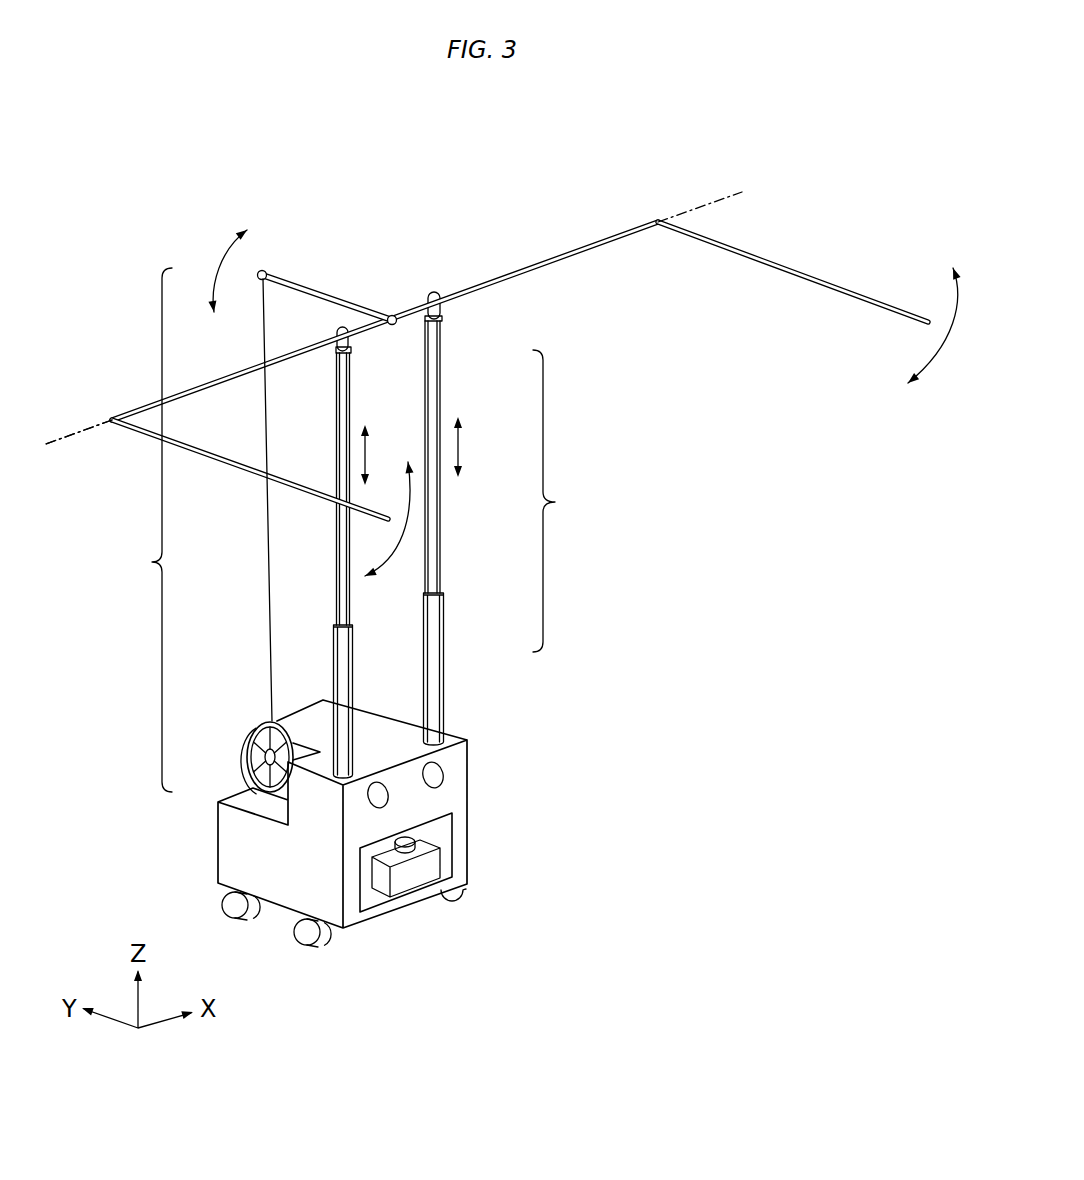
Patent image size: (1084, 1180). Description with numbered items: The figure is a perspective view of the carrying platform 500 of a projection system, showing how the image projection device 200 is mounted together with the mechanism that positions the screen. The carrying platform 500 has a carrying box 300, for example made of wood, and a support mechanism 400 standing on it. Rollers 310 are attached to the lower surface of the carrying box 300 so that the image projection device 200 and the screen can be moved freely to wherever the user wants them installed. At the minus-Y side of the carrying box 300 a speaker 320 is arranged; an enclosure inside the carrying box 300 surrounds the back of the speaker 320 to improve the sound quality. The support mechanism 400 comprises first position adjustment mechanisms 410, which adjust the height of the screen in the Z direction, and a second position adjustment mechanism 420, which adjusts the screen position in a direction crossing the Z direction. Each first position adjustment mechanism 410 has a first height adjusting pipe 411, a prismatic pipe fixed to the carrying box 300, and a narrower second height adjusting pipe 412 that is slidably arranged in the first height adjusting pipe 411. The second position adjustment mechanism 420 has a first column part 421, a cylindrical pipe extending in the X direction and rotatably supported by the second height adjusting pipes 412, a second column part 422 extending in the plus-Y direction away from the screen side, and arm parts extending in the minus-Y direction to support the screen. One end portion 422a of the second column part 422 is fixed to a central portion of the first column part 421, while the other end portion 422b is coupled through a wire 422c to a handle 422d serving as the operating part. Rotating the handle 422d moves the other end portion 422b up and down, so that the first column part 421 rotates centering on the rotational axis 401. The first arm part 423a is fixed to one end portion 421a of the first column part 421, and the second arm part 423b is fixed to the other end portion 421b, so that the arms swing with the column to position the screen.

The carrying platform 500 is at (832, 108).
The support mechanism 400 is at (643, 574).
The first position adjustment mechanisms 410 is at (484, 501).
The first height adjusting pipe 411 is at (443, 635).
The second height adjusting pipe 412 is at (442, 362).
The second position adjustment mechanism 420 is at (138, 530).
The first column part 421 is at (513, 274).
The one end portion of the first column part 421a is at (112, 418).
The other end portion of the first column part 421b is at (658, 220).
The second column part 422 is at (322, 292).
The one end portion of the second column part 422a is at (392, 316).
The other end portion of the second column part 422b is at (264, 271).
The wire 422c is at (268, 605).
The handle 422d is at (265, 722).
The first arm part 423a is at (232, 462).
The second arm part 423b is at (800, 268).
The rotational axis 401 is at (89, 429).
The carrying box 300 is at (219, 847).
The rollers 310 is at (312, 942).
The speaker 320 is at (443, 770).
The image projection device 200 is at (420, 877).